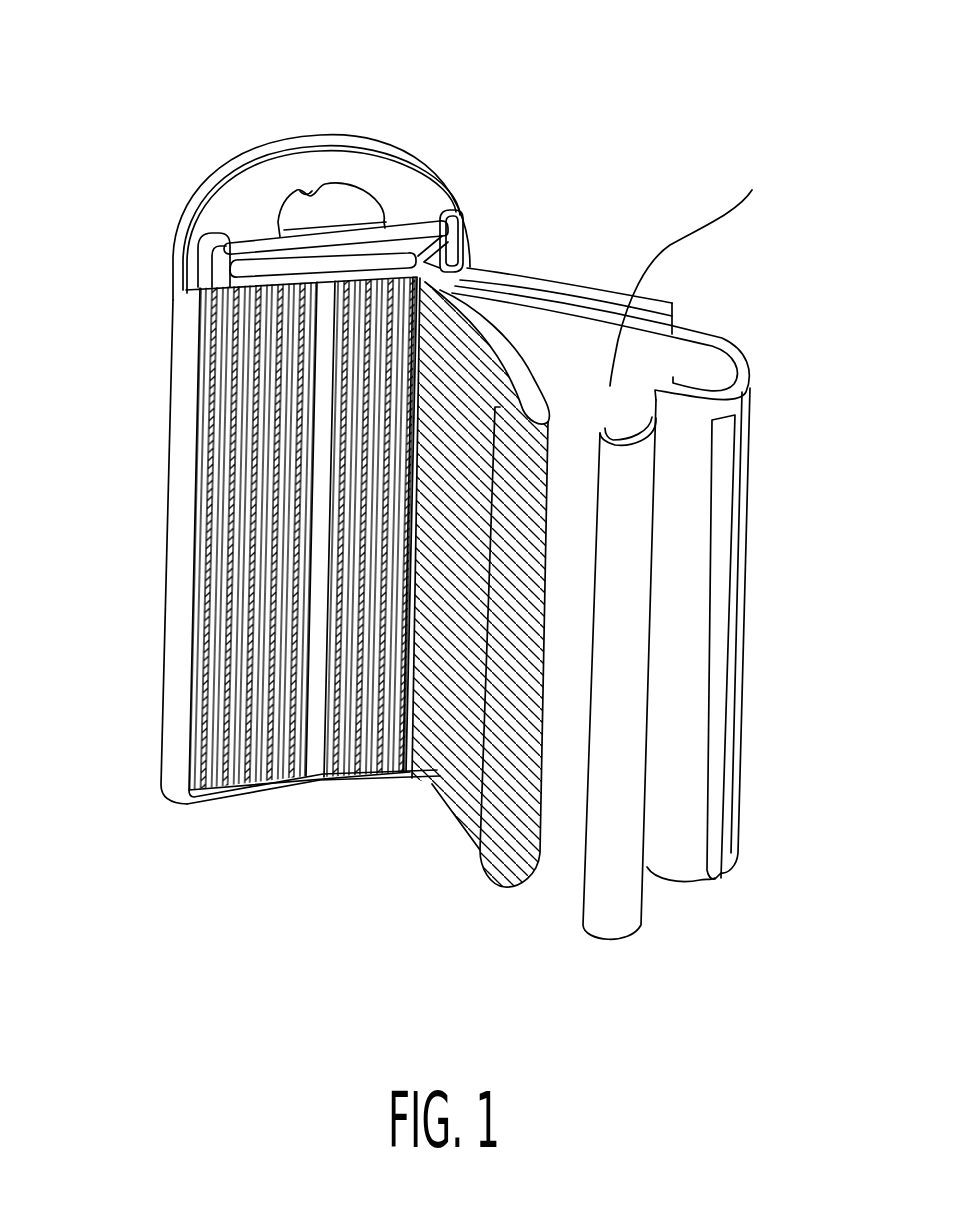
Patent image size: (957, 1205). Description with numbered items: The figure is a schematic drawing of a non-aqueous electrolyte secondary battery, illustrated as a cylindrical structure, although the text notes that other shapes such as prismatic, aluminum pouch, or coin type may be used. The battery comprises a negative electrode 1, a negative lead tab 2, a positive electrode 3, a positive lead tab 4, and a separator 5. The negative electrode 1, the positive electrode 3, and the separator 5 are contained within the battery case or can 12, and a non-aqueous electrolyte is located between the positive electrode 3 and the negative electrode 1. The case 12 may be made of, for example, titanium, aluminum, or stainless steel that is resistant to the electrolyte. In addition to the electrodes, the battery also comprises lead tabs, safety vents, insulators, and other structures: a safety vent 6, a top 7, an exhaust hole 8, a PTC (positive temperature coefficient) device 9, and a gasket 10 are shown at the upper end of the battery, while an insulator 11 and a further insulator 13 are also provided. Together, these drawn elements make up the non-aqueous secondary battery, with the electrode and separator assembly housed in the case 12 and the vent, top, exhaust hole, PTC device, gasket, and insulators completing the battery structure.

The negative electrode 1 is at (750, 440).
The negative lead tab 2 is at (727, 563).
The positive electrode 3 is at (498, 863).
The positive lead tab 4 is at (463, 262).
The separator 5 is at (652, 310).
The safety vent 6 is at (390, 213).
The top 7 is at (343, 197).
The exhaust hole 8 is at (306, 180).
The PTC device 9 is at (243, 245).
The gasket 10 is at (207, 277).
The insulator 11 is at (220, 275).
The battery case 12 is at (180, 437).
The insulator 13 is at (188, 808).